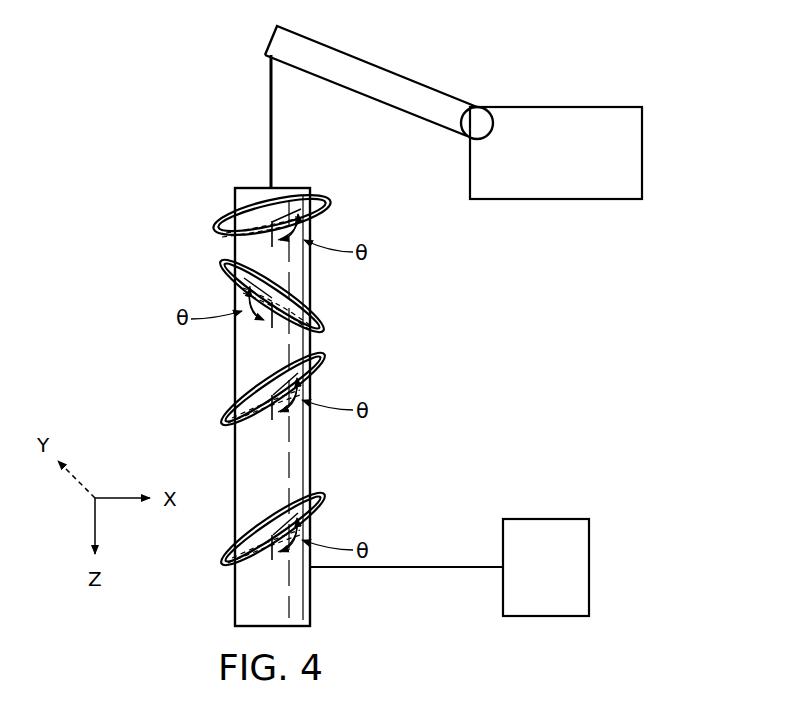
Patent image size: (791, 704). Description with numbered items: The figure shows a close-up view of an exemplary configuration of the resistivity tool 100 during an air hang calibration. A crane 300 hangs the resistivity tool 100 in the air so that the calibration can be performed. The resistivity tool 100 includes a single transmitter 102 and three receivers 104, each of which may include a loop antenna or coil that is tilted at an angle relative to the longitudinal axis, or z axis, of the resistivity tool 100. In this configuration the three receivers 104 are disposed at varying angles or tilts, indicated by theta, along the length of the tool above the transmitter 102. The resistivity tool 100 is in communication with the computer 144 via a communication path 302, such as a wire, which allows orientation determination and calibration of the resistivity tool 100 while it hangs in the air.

The resistivity tool 100 is at (206, 168).
The transmitter 102 is at (222, 560).
The receivers 104 is at (214, 224).
The computer 144 is at (545, 518).
The crane 300 is at (606, 70).
The communication path 302 is at (405, 569).